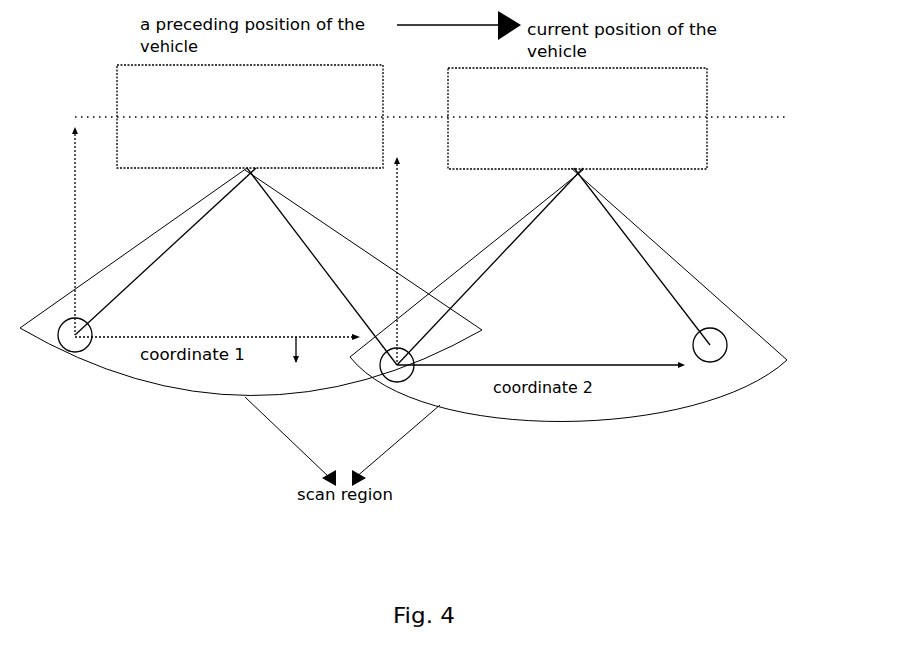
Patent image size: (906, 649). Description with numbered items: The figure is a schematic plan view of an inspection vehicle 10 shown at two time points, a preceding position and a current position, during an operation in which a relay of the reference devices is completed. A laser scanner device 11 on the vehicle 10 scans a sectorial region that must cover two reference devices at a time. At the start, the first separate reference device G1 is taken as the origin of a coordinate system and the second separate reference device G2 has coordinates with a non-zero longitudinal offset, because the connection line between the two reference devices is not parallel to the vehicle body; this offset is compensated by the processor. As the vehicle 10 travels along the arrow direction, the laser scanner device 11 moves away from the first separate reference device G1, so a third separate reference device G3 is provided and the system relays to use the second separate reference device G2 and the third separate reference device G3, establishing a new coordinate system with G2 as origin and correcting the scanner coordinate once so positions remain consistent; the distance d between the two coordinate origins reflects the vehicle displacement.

The vehicle 10 is at (412, 117).
The laser scanner device 11 is at (403, 295).
The first separate reference device G1 is at (75, 343).
The second separate reference device G2 is at (397, 381).
The third separate reference device G3 is at (714, 374).
The travel distance d is at (302, 351).